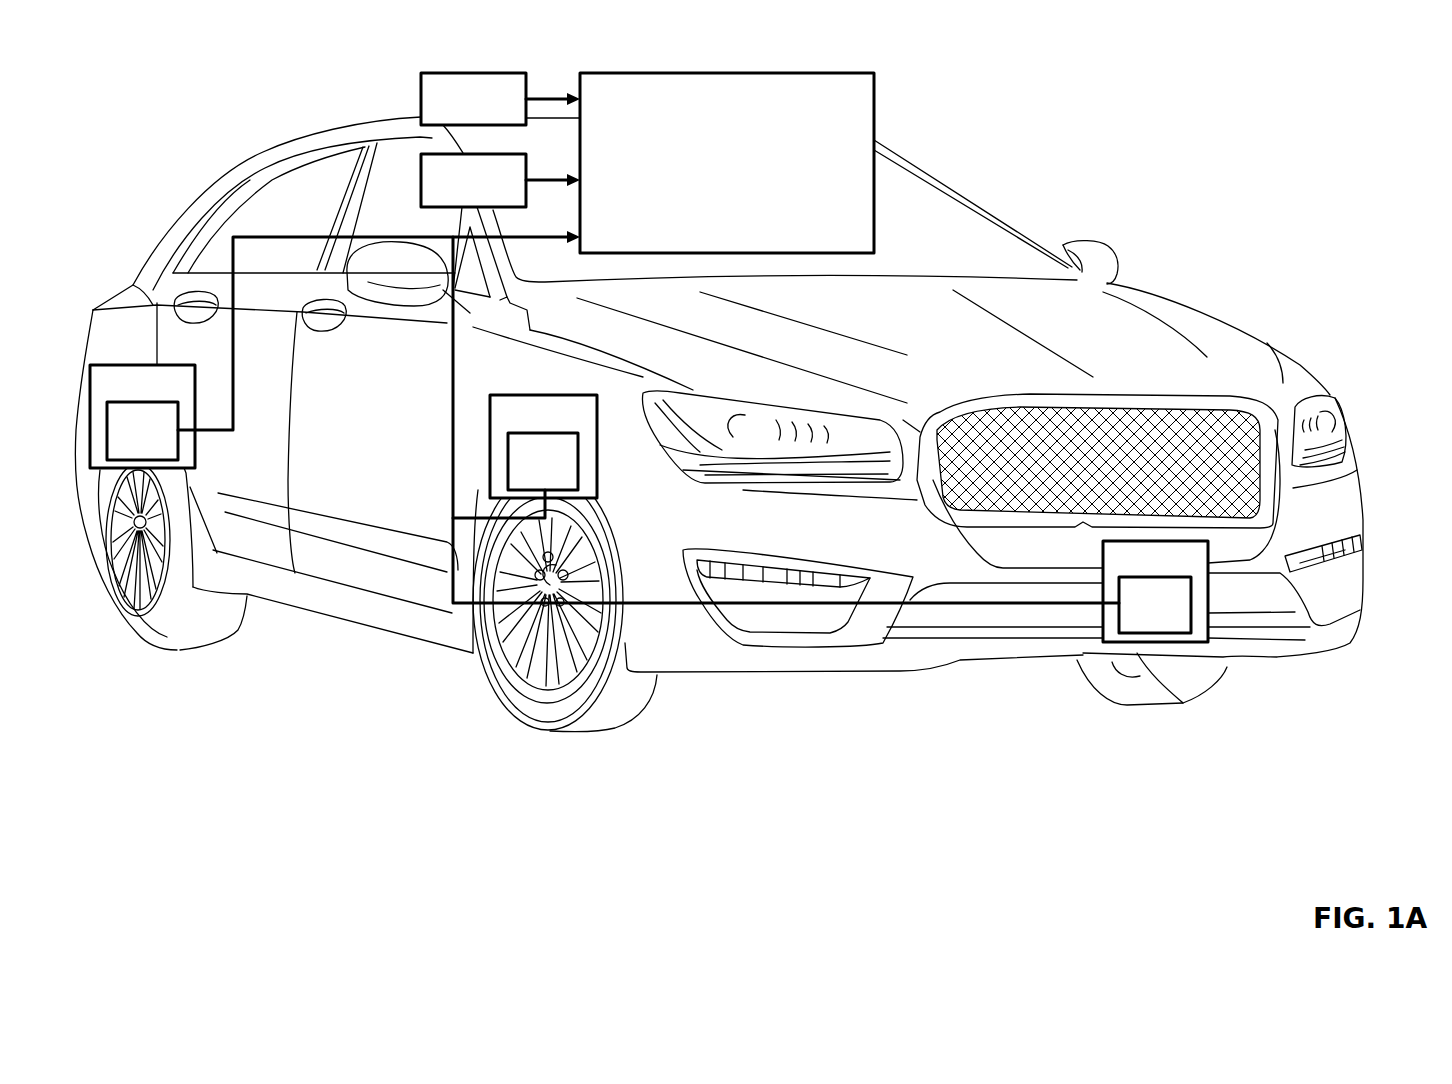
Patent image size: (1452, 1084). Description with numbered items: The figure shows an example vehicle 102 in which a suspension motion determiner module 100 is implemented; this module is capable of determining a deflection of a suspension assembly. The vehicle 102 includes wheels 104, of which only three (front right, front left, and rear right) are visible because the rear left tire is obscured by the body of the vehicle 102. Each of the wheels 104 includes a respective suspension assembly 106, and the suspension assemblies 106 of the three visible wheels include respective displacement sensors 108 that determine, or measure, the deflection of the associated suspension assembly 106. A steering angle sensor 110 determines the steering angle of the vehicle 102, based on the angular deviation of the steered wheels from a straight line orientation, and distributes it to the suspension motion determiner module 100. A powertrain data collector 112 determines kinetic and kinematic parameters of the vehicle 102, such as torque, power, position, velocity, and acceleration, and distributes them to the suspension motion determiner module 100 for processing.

The suspension motion determiner module 100 is at (708, 206).
The vehicle 102 is at (1038, 177).
The wheels 104 is at (180, 652).
The suspension assembly 106 is at (123, 398).
The displacement sensor 108 is at (123, 445).
The steering angle sensor 110 is at (454, 111).
The powertrain data collector 112 is at (454, 192).